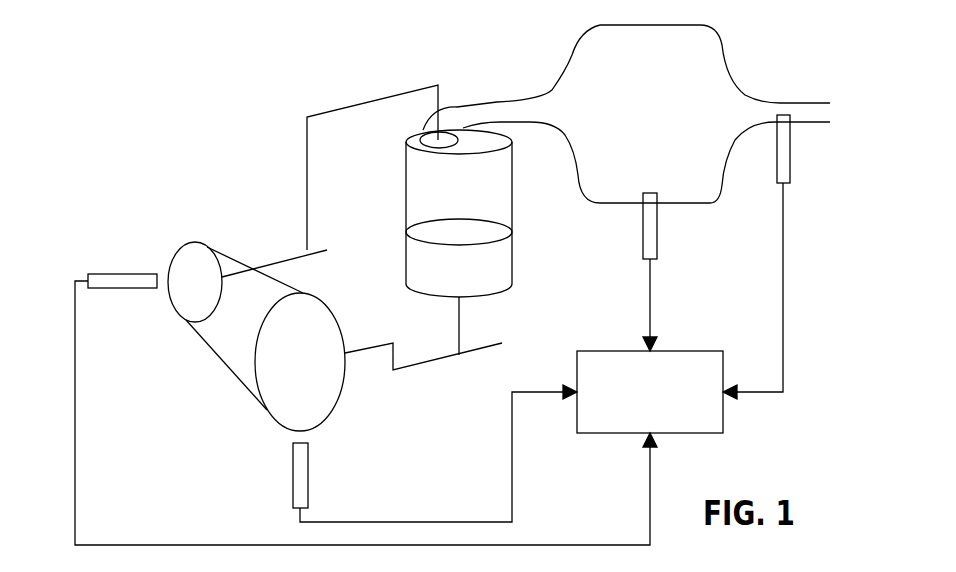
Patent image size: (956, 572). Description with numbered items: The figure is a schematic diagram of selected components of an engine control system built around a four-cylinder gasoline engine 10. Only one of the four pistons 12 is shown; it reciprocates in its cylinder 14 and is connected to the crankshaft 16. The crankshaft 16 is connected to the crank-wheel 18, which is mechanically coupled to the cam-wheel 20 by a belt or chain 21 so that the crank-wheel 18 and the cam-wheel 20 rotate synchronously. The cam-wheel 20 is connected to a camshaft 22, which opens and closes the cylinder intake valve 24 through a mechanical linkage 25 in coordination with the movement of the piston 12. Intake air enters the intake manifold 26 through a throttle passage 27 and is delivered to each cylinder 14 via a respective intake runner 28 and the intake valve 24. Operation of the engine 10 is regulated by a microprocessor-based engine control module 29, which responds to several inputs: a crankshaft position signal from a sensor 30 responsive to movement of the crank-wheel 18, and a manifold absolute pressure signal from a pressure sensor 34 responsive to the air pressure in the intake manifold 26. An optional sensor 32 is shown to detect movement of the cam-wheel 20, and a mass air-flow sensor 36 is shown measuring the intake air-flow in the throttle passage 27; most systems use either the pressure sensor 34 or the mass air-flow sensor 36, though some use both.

The engine 10 is at (200, 136).
The piston 12 is at (498, 272).
The cylinder 14 is at (497, 198).
The crankshaft 16 is at (459, 357).
The crank-wheel 18 is at (330, 417).
The cam-wheel 20 is at (175, 252).
The belt or chain 21 is at (213, 353).
The camshaft 22 is at (273, 260).
The cylinder intake valve 24 is at (423, 130).
The mechanical linkage 25 is at (375, 97).
The intake manifold 26 is at (690, 114).
The throttle passage 27 is at (802, 107).
The intake runner 28 is at (498, 102).
The engine control module 29 is at (605, 350).
The crankshaft position sensor 30 is at (293, 473).
The cam-wheel sensor 32 is at (120, 288).
The pressure sensor 34 is at (657, 237).
The mass air-flow sensor 36 is at (790, 160).